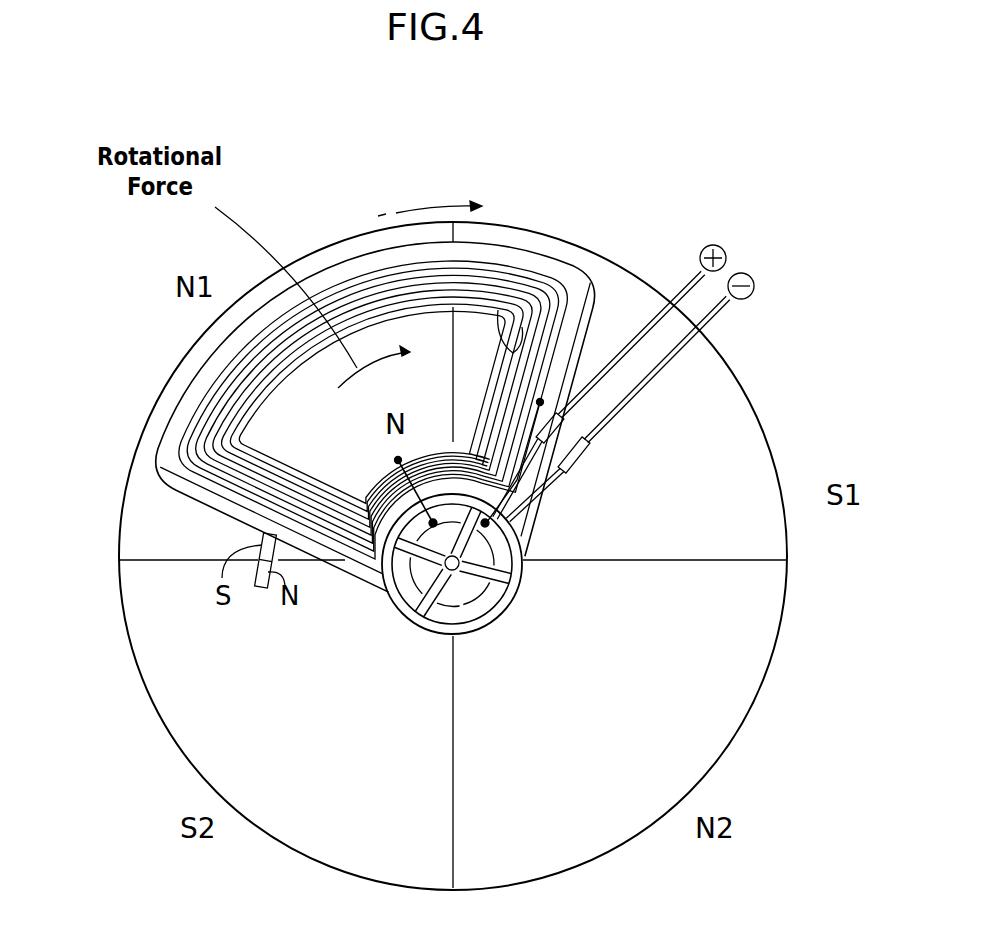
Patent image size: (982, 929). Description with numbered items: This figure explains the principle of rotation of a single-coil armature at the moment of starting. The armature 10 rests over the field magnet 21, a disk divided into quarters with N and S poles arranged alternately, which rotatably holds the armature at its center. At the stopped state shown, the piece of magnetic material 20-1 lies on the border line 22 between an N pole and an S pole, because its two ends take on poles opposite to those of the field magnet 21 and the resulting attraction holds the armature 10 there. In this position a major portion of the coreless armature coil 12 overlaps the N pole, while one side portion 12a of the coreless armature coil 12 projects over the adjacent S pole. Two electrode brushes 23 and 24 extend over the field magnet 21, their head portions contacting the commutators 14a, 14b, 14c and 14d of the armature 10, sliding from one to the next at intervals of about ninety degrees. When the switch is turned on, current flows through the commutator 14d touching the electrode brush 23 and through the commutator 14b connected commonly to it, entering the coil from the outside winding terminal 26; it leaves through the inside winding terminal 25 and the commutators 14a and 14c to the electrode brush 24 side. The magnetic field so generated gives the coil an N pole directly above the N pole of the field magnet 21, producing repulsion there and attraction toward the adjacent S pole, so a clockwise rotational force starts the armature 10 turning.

The armature 10 is at (338, 264).
The coreless armature coil 12 is at (200, 420).
The one side portion of the coreless armature coil 12a is at (498, 310).
The commutator 14a is at (424, 597).
The commutator 14b is at (488, 553).
The commutator 14c is at (478, 620).
The commutator 14d is at (443, 626).
The piece of magnetic material 20-1 is at (259, 589).
The field magnet 21 is at (776, 448).
The border line 22 is at (152, 560).
The electrode brush 23 is at (690, 284).
The electrode brush 24 is at (720, 308).
The inside winding terminal 25 is at (434, 517).
The outside winding terminal 26 is at (490, 524).